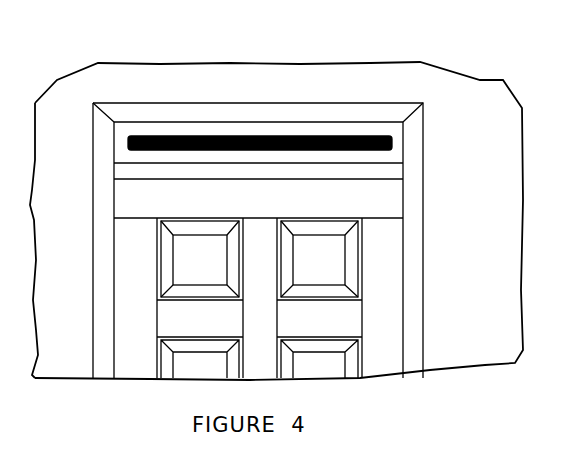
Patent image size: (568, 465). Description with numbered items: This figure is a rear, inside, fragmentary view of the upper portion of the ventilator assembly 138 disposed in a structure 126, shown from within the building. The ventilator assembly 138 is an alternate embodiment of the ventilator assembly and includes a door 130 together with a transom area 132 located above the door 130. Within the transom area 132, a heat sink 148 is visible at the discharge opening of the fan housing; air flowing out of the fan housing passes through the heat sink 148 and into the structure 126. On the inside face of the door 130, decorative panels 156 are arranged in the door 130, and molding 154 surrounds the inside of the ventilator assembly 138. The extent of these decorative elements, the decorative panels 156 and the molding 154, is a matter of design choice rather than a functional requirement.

The structure 126 is at (125, 80).
The door 130 is at (312, 224).
The transom area 132 is at (388, 172).
The ventilator assembly 138 is at (295, 117).
The heat sink 148 is at (335, 140).
The molding 154 is at (410, 282).
The decorative panels 156 is at (350, 362).